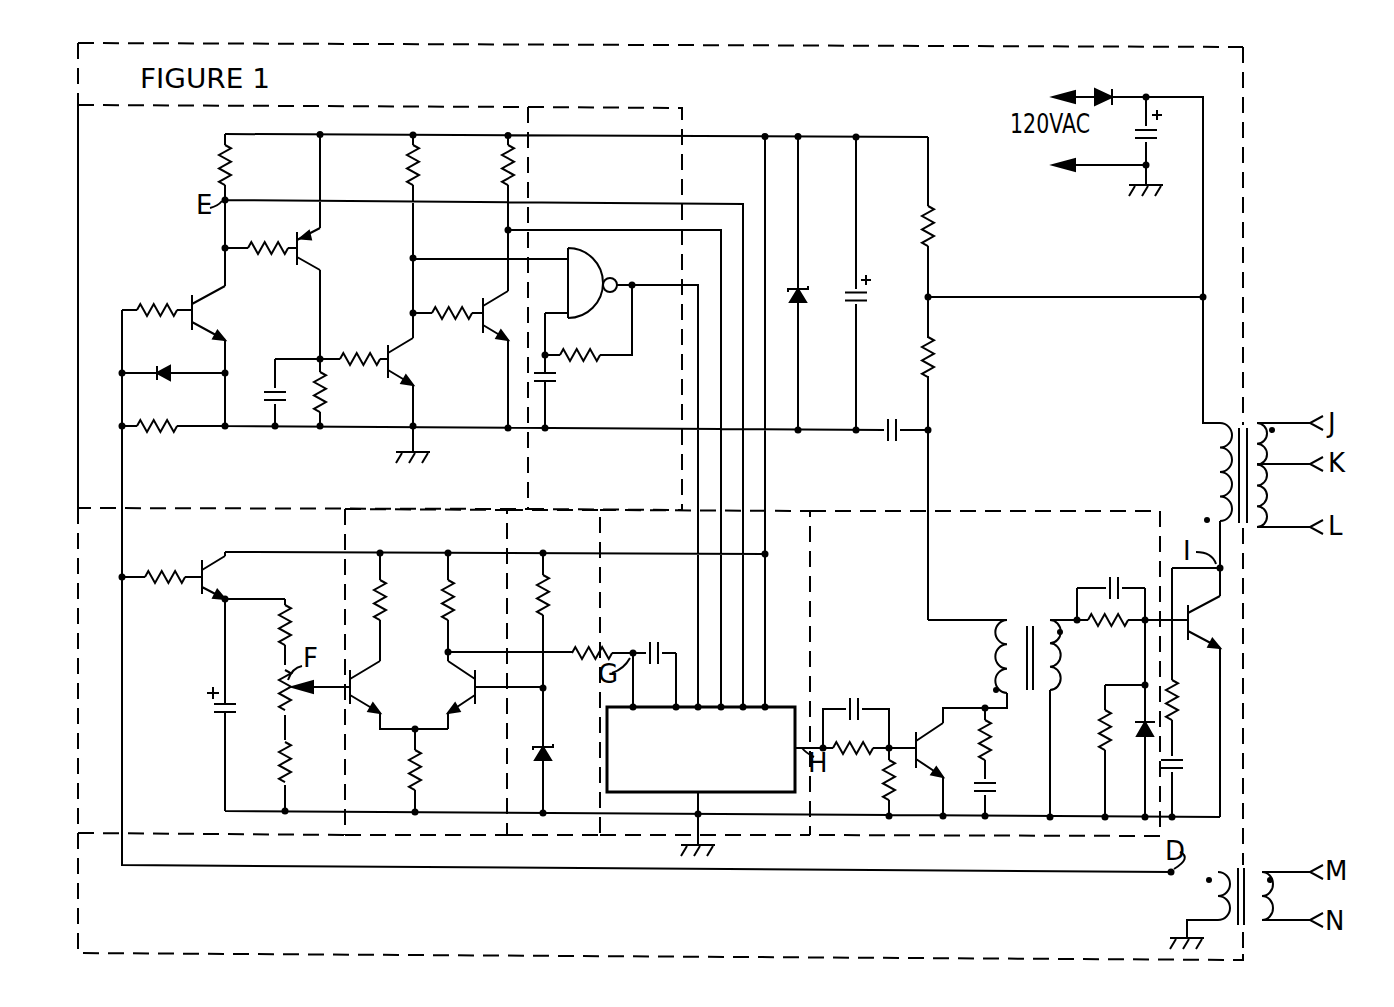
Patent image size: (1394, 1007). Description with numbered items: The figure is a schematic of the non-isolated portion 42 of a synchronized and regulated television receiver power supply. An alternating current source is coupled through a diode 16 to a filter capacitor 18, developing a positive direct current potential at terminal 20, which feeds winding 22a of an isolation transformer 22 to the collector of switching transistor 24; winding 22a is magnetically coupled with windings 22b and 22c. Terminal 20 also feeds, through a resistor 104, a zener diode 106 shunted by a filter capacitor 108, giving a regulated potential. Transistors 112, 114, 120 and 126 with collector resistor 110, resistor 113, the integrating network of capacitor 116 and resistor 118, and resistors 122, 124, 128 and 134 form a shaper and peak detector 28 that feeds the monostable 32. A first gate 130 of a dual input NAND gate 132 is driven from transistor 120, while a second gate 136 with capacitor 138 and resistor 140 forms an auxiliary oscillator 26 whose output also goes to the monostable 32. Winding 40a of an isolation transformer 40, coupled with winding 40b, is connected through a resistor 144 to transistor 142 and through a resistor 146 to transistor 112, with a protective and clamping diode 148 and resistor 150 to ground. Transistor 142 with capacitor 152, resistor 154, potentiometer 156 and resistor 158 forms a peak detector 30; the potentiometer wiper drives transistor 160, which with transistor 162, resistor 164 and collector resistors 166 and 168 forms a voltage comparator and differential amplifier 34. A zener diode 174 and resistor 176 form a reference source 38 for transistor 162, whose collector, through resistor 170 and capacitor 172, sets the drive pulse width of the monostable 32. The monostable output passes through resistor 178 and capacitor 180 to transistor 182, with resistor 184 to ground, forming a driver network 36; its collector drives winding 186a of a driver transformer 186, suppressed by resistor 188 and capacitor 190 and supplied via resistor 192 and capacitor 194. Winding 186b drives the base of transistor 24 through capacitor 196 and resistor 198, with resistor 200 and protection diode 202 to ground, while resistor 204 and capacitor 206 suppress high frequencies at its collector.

The diode 16 is at (1100, 72).
The filter capacitor 18 is at (1155, 140).
The terminal 20 is at (1156, 72).
The isolation transformer 22 is at (1275, 462).
The winding 22a is at (1222, 477).
The winding 22b is at (1268, 447).
The winding 22c is at (1268, 498).
The switching transistor 24 is at (1227, 631).
The auxiliary oscillator 26 is at (645, 417).
The shaper and peak detector 28 is at (297, 333).
The peak detector 30 is at (192, 636).
The monostable 32 is at (790, 707).
The voltage comparator and differential amplifier 34 is at (425, 664).
The driver network 36 is at (877, 587).
The reference source 38 is at (587, 725).
The isolation transformer 40 is at (1241, 886).
The winding 40a is at (1213, 902).
The winding 40b is at (1265, 894).
The non-isolated portion 42 is at (240, 926).
The resistor 104 is at (934, 224).
The zener diode 106 is at (806, 298).
The filter capacitor 108 is at (860, 303).
The collector resistor 110 is at (221, 169).
The transistor 112 is at (243, 320).
The resistor 113 is at (268, 242).
The transistor 114 is at (344, 258).
The capacitor 116 is at (268, 396).
The resistor 118 is at (326, 395).
The transistor 120 is at (439, 370).
The resistor 122 is at (382, 357).
The resistor 124 is at (420, 160).
The transistor 126 is at (529, 322).
The resistor 128 is at (471, 307).
The first gate 130 is at (567, 261).
The dual input NAND gate 132 is at (596, 267).
The resistor 134 is at (511, 160).
The second gate 136 is at (563, 318).
The capacitor 138 is at (548, 385).
The resistor 140 is at (575, 358).
The transistor 142 is at (258, 584).
The resistor 144 is at (180, 573).
The resistor 146 is at (177, 303).
The protective and clamping diode 148 is at (173, 368).
The resistor 150 is at (179, 436).
The capacitor 152 is at (214, 716).
The resistor 154 is at (290, 636).
The potentiometer 156 is at (288, 706).
The resistor 158 is at (290, 762).
The transistor 160 is at (403, 694).
The transistor 162 is at (459, 701).
The resistor 164 is at (422, 764).
The resistor 166 is at (382, 612).
The resistor 168 is at (450, 612).
The resistor 170 is at (611, 650).
The capacitor 172 is at (649, 636).
The zener diode 174 is at (548, 762).
The resistor 176 is at (549, 611).
The resistor 178 is at (861, 750).
The capacitor 180 is at (875, 702).
The transistor 182 is at (966, 757).
The resistor 184 is at (882, 796).
The driver transformer 186 is at (1030, 639).
The winding 186a is at (1007, 673).
The winding 186b is at (1050, 658).
The resistor 188 is at (987, 736).
The capacitor 190 is at (989, 789).
The resistor 192 is at (937, 352).
The capacitor 194 is at (886, 438).
The capacitor 196 is at (1130, 565).
The resistor 198 is at (1085, 628).
The resistor 200 is at (1098, 720).
The protection diode 202 is at (1138, 736).
The resistor 204 is at (1177, 703).
The capacitor 206 is at (1186, 758).